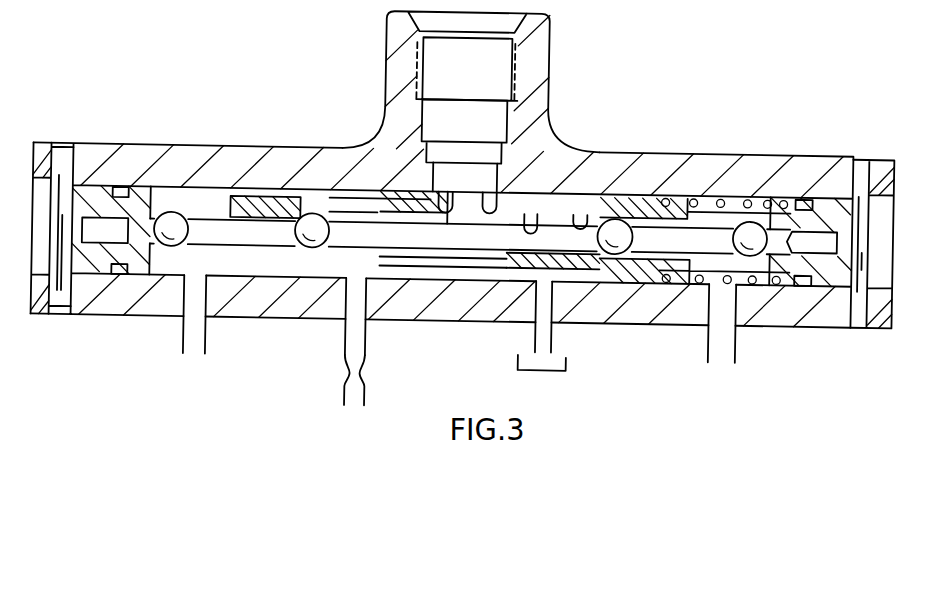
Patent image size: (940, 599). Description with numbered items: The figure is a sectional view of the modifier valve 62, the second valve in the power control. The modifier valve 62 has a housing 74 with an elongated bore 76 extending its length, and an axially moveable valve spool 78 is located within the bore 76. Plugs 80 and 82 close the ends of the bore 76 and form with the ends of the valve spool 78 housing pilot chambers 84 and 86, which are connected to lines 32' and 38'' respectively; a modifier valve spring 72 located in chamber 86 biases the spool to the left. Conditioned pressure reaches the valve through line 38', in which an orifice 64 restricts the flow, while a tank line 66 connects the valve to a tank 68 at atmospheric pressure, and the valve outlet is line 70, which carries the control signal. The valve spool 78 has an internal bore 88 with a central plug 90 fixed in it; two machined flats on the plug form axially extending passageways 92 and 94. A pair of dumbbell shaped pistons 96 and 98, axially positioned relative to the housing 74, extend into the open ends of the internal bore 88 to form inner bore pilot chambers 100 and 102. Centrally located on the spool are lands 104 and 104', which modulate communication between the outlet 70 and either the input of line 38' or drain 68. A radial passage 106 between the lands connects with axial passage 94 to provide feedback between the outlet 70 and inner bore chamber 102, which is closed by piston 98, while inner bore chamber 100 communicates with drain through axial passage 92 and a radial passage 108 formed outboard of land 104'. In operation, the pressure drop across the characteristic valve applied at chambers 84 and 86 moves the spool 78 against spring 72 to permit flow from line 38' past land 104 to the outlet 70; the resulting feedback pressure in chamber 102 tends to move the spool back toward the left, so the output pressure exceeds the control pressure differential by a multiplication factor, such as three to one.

The modifier valve 62 is at (824, 82).
The line 70 is at (447, 77).
The modifier valve spring 72 is at (750, 157).
The housing 74 is at (628, 153).
The elongated bore 76 is at (337, 197).
The valve spool 78 is at (263, 197).
The plug 80 is at (98, 198).
The plug 82 is at (835, 208).
The housing pilot chamber 84 is at (190, 266).
The housing pilot chamber 86 is at (686, 255).
The internal bore 88 is at (590, 213).
The central plug 90 is at (452, 237).
The axially extending passageway 92 is at (397, 243).
The axially extending passageway 94 is at (541, 228).
The dumbbell shaped piston 96 is at (310, 217).
The dumbbell shaped piston 98 is at (624, 221).
The inner bore pilot chamber 100 is at (308, 281).
The inner bore pilot chamber 102 is at (576, 250).
The land 104 is at (390, 132).
The land 104' is at (545, 132).
The radial passage 106 is at (460, 195).
The radial passage 108 is at (488, 242).
The line 32' is at (166, 316).
The line 38' is at (327, 317).
The line 38'' is at (764, 334).
The orifice 64 is at (348, 365).
The tank line 66 is at (555, 338).
The tank 68 is at (558, 372).